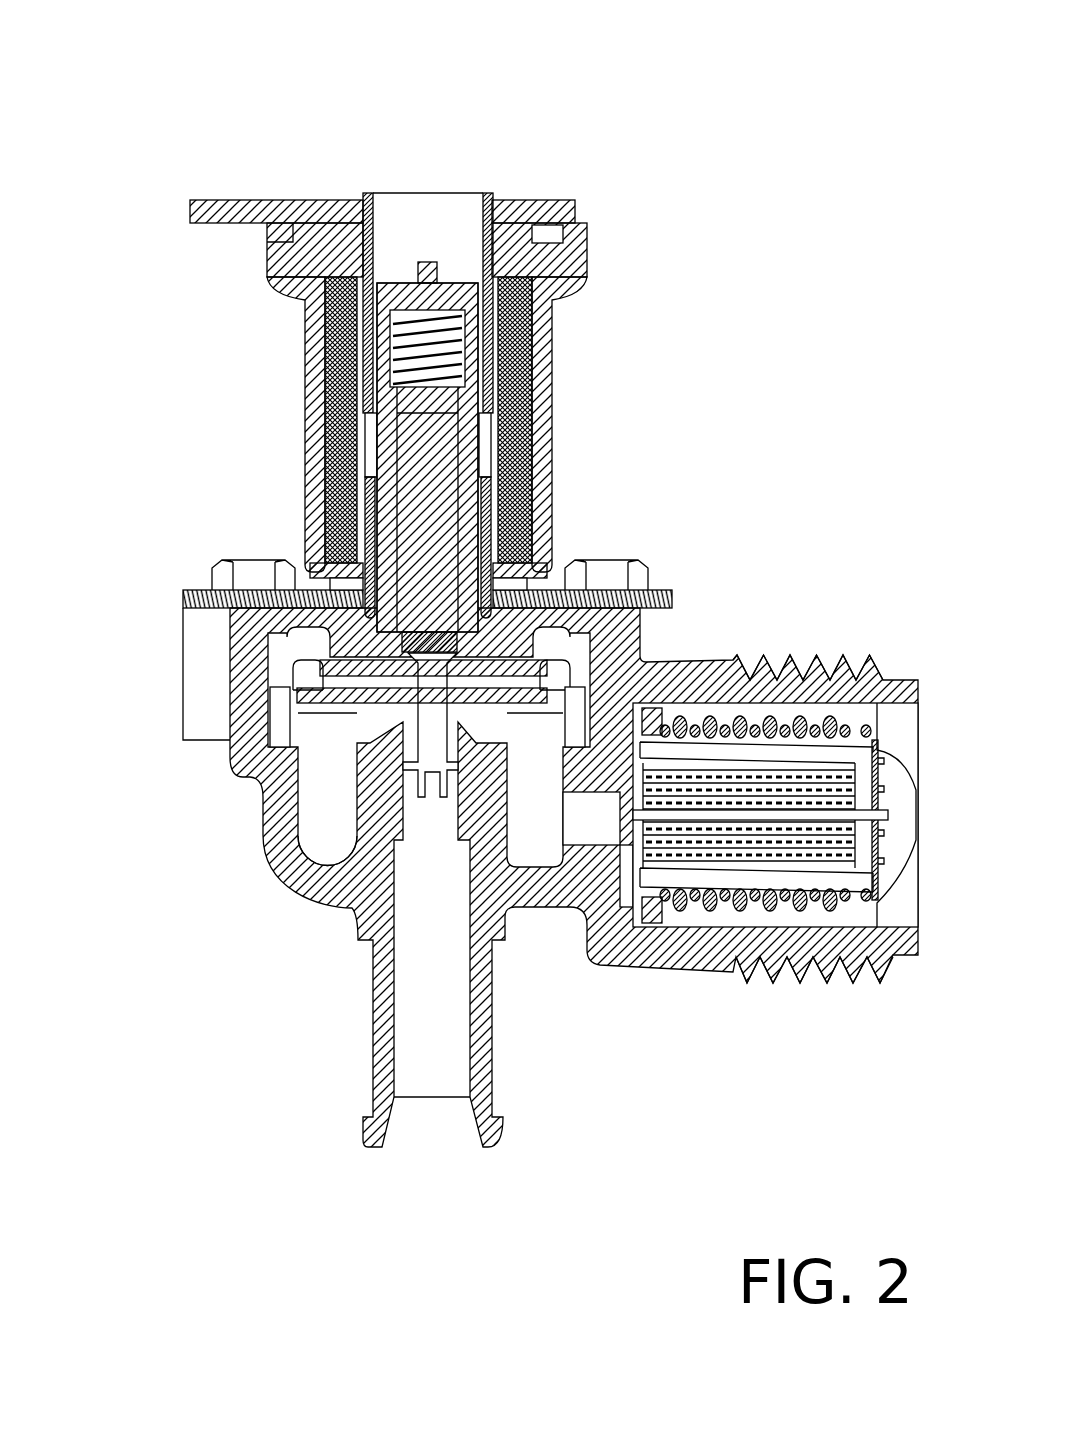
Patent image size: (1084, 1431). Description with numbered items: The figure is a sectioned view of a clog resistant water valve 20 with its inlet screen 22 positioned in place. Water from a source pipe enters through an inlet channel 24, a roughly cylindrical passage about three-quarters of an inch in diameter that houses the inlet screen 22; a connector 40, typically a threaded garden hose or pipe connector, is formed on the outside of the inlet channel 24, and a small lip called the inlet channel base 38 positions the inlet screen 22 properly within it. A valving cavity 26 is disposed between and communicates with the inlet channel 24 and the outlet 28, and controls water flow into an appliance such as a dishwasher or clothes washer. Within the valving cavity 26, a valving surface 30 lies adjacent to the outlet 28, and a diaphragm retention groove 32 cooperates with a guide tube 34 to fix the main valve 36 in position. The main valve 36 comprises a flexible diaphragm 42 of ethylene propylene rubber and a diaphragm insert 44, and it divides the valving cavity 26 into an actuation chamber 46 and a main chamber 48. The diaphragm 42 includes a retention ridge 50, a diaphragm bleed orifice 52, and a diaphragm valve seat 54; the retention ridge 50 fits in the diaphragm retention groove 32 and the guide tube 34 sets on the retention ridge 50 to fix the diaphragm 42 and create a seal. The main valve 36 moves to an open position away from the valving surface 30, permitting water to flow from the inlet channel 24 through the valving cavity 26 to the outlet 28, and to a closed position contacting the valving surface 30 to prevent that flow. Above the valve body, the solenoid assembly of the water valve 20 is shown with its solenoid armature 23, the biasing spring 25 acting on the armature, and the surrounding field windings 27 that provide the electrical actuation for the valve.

The clog resistant water valve 20 is at (425, 160).
The inlet screen 22 is at (858, 625).
The solenoid armature 23 is at (428, 236).
The inlet channel 24 is at (728, 715).
The biasing spring 25 is at (428, 332).
The valving cavity 26 is at (340, 845).
The field windings 27 is at (535, 383).
The outlet 28 is at (437, 1078).
The valving surface 30 is at (500, 740).
The diaphragm retention groove 32 is at (581, 745).
The guide tube 34 is at (455, 295).
The main valve 36 is at (270, 915).
The inlet channel base 38 is at (630, 920).
The connector 40 is at (837, 970).
The diaphragm 42 is at (297, 703).
The diaphragm insert 44 is at (235, 752).
The actuation chamber 46 is at (310, 643).
The main chamber 48 is at (331, 790).
The retention ridge 50 is at (263, 773).
The diaphragm bleed orifice 52 is at (318, 712).
The diaphragm valve seat 54 is at (528, 755).